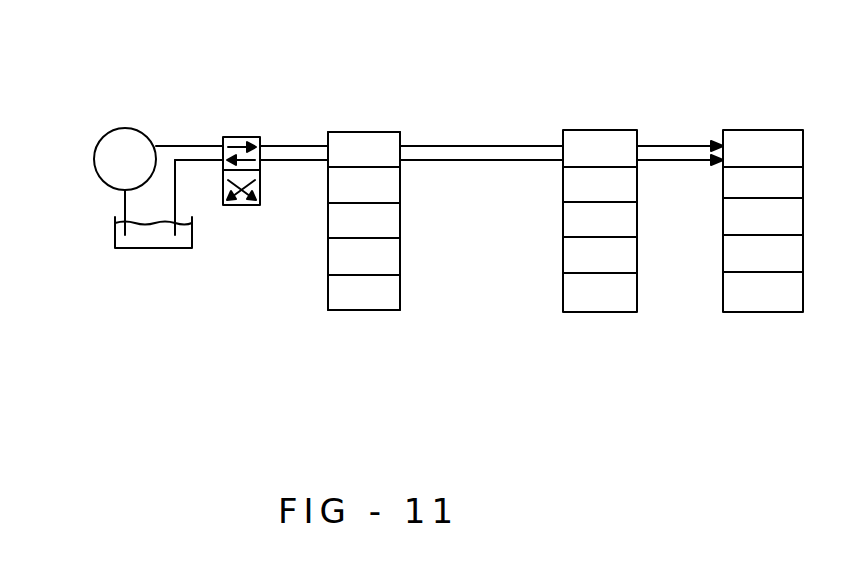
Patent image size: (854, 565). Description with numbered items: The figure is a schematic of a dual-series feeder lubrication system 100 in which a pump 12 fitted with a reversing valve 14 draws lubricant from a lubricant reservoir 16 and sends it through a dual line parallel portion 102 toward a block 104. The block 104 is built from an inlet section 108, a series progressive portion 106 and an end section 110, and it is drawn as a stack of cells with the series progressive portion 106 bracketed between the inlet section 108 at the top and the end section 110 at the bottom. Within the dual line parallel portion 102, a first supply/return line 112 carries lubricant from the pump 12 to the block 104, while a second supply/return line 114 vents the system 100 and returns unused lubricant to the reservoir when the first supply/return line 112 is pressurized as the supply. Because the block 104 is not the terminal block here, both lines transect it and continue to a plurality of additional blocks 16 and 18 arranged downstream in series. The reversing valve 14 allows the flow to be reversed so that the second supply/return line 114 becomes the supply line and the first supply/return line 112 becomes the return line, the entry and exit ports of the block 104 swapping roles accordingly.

The dual-series feeder lubrication system 100 is at (524, 14).
The pump 12 is at (150, 88).
The reversing valve 14 is at (240, 137).
The lubricant reservoir 16 is at (115, 238).
The additional block 18 is at (768, 127).
The dual line parallel portion 102 is at (279, 141).
The block 104 is at (367, 131).
The series progressive portion 106 is at (406, 170).
The inlet section 108 is at (382, 140).
The end section 110 is at (380, 303).
The first supply/return line 112 is at (303, 162).
The second supply/return line 114 is at (293, 144).